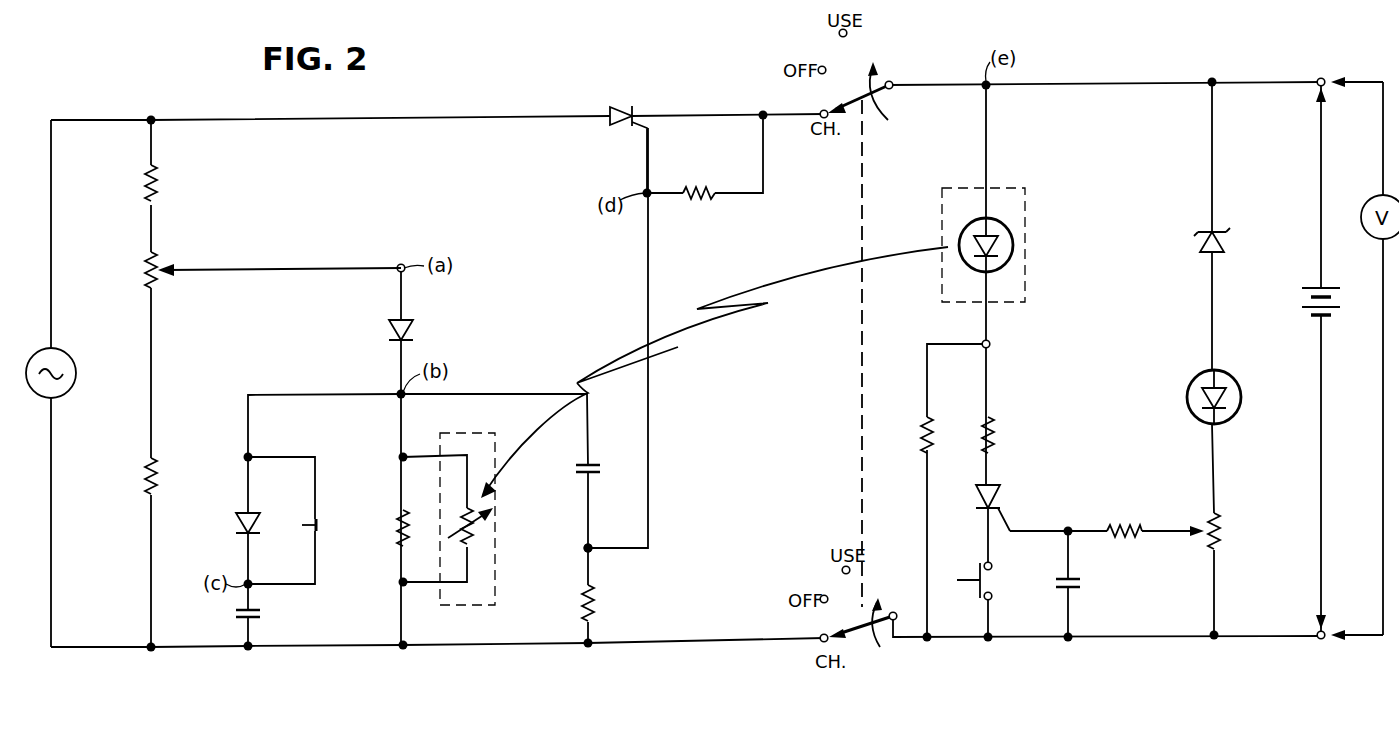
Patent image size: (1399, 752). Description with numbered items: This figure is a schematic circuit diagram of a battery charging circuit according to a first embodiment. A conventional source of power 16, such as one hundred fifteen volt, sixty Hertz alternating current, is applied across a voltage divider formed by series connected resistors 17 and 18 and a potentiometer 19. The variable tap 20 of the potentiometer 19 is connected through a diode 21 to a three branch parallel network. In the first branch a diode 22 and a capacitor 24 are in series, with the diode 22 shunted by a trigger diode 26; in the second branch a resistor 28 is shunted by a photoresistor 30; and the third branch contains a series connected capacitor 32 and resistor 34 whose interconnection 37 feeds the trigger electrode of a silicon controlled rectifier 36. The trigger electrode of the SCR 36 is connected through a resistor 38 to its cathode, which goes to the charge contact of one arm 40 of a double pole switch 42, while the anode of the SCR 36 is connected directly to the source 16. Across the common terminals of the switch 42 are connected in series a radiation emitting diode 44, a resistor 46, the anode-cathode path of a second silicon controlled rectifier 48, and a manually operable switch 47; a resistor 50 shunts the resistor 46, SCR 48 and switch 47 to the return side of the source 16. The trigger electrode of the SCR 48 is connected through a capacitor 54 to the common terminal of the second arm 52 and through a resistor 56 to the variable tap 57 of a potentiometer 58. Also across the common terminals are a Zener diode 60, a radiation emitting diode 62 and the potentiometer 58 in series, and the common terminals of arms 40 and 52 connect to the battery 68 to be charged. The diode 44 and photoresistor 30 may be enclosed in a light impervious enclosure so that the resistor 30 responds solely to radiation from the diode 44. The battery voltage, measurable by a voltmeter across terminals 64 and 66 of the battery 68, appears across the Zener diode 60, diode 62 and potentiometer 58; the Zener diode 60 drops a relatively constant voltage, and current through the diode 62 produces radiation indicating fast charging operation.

The source of power 16 is at (66, 355).
The resistor 17 is at (160, 184).
The resistor 18 is at (160, 456).
The potentiometer 19 is at (142, 260).
The variable tap 20 is at (175, 269).
The diode 21 is at (410, 334).
The diode 22 is at (239, 514).
The capacitor 24 is at (262, 614).
The trigger diode 26 is at (324, 522).
The resistor 28 is at (395, 530).
The photoresistor 30 is at (483, 538).
The capacitor 32 is at (593, 462).
The resistor 34 is at (597, 593).
The silicon controlled rectifier 36 is at (610, 107).
The interconnection 37 is at (585, 550).
The resistor 38 is at (697, 188).
The arm 40 is at (880, 100).
The double pole switch 42 is at (886, 76).
The radiation emitting diode 44 is at (1013, 238).
The resistor 46 is at (995, 417).
The manually operable switch 47 is at (962, 575).
The second silicon controlled rectifier 48 is at (998, 488).
The resistor 50 is at (920, 417).
The arm 52 is at (890, 610).
The capacitor 54 is at (1082, 583).
The resistor 56 is at (1112, 524).
The variable tap 57 is at (1190, 528).
The potentiometer 58 is at (1225, 526).
The Zener diode 60 is at (1204, 250).
The radiation emitting diode 62 is at (1228, 380).
The terminal 64 is at (1320, 76).
The terminal 66 is at (1316, 631).
The battery 68 is at (1313, 288).